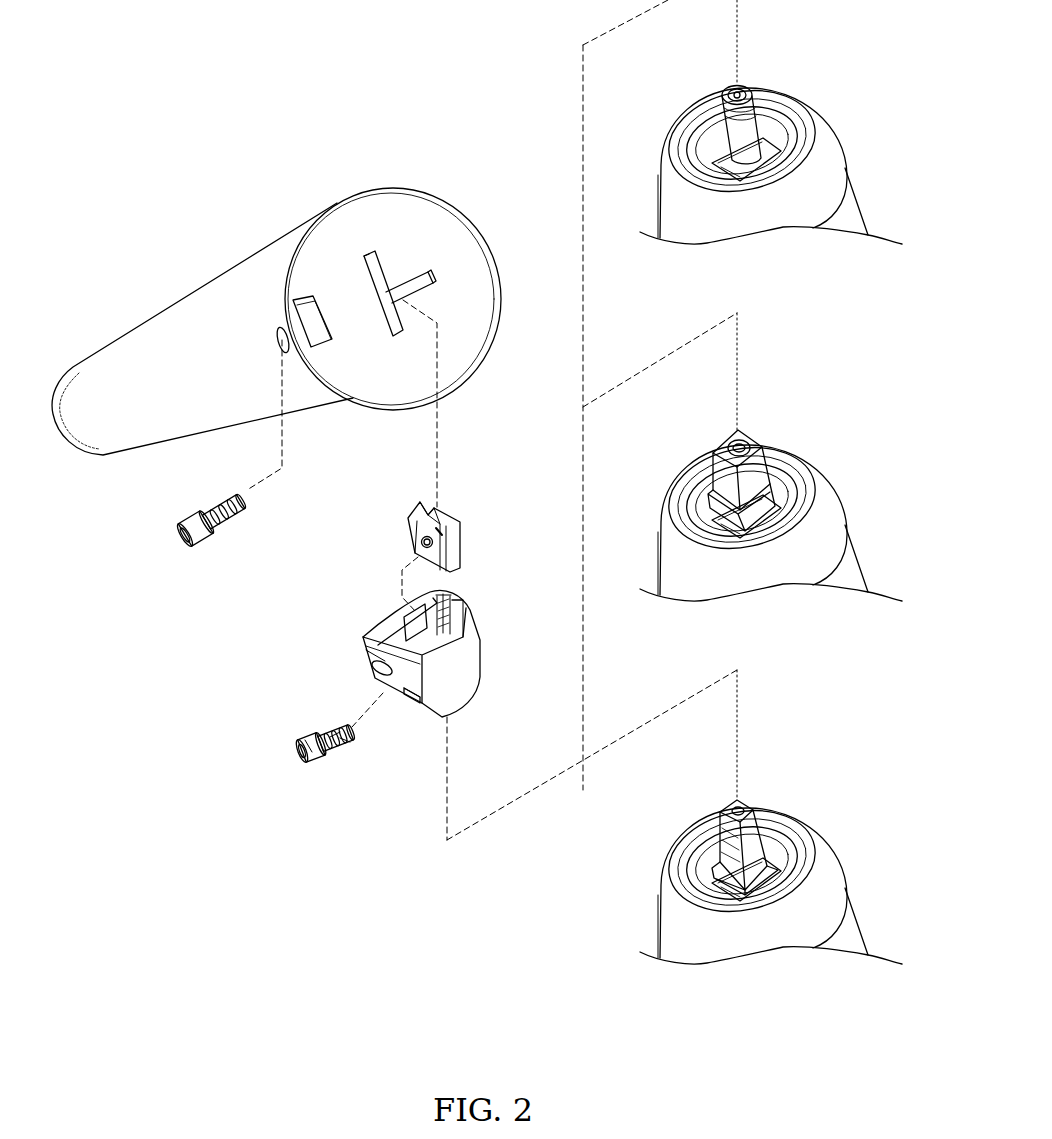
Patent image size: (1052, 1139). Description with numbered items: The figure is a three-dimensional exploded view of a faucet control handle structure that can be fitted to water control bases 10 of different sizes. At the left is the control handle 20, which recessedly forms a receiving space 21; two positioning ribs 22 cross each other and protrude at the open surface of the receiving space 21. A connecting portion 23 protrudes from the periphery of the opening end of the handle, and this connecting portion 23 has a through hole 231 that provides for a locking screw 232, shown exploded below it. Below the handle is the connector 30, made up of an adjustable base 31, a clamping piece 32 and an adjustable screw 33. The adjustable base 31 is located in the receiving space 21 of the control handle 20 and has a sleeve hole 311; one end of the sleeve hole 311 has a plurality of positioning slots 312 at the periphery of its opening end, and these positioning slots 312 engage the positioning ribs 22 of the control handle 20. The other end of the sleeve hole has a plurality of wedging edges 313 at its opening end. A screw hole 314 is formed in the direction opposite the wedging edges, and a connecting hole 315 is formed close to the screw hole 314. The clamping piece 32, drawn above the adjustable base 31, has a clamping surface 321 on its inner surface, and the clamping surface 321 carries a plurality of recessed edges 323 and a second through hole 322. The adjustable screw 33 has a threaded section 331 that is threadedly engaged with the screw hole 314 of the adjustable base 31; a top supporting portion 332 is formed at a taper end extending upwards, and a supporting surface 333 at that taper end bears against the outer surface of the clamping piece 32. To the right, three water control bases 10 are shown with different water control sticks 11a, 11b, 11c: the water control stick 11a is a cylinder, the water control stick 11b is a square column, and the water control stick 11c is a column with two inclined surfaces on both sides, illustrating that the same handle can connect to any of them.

The water control base 10 is at (818, 177).
The water control stick 11a is at (724, 110).
The water control stick 11b is at (710, 458).
The water control stick 11c is at (721, 813).
The control handle 20 is at (281, 268).
The receiving space 21 is at (340, 242).
The positioning ribs 22 is at (417, 290).
The connecting portion 23 is at (310, 346).
The through hole 231 is at (279, 328).
The locking screw 232 is at (217, 495).
The connector 30 is at (363, 637).
The adjustable base 31 is at (457, 670).
The sleeve hole 311 is at (403, 617).
The positioning slots 312 is at (453, 600).
The wedging edges 313 is at (460, 607).
The screw hole 314 is at (383, 690).
The connecting hole 315 is at (370, 663).
The clamping piece 32 is at (417, 523).
The clamping surface 321 is at (446, 513).
The second through hole 322 is at (418, 540).
The recessed edges 323 is at (437, 530).
The adjustable screw 33 is at (327, 762).
The threaded section 331 is at (335, 758).
The top supporting portion 332 is at (313, 722).
The supporting surface 333 is at (350, 740).